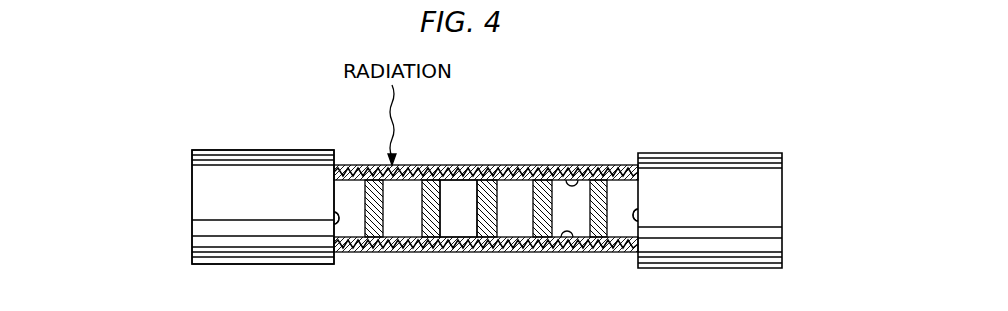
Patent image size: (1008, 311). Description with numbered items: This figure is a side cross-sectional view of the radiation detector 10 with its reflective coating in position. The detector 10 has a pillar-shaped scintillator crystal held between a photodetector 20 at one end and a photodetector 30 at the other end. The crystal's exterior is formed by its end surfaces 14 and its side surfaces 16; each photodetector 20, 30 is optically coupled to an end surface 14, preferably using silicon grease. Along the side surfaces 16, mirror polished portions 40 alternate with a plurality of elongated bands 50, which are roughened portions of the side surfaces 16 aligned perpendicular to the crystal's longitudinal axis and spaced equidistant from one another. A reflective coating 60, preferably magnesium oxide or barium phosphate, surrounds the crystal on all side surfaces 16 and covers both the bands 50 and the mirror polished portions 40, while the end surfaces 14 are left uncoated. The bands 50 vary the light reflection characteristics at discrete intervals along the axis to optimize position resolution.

The detector 10 is at (270, 81).
The end surfaces 14 is at (335, 224).
The side surfaces 16 is at (578, 179).
The photodetector 20 is at (232, 168).
The photodetector 30 is at (738, 174).
The mirror polished portions 40 is at (460, 222).
The elongated bands 50 is at (489, 222).
The reflective coating 60 is at (448, 165).